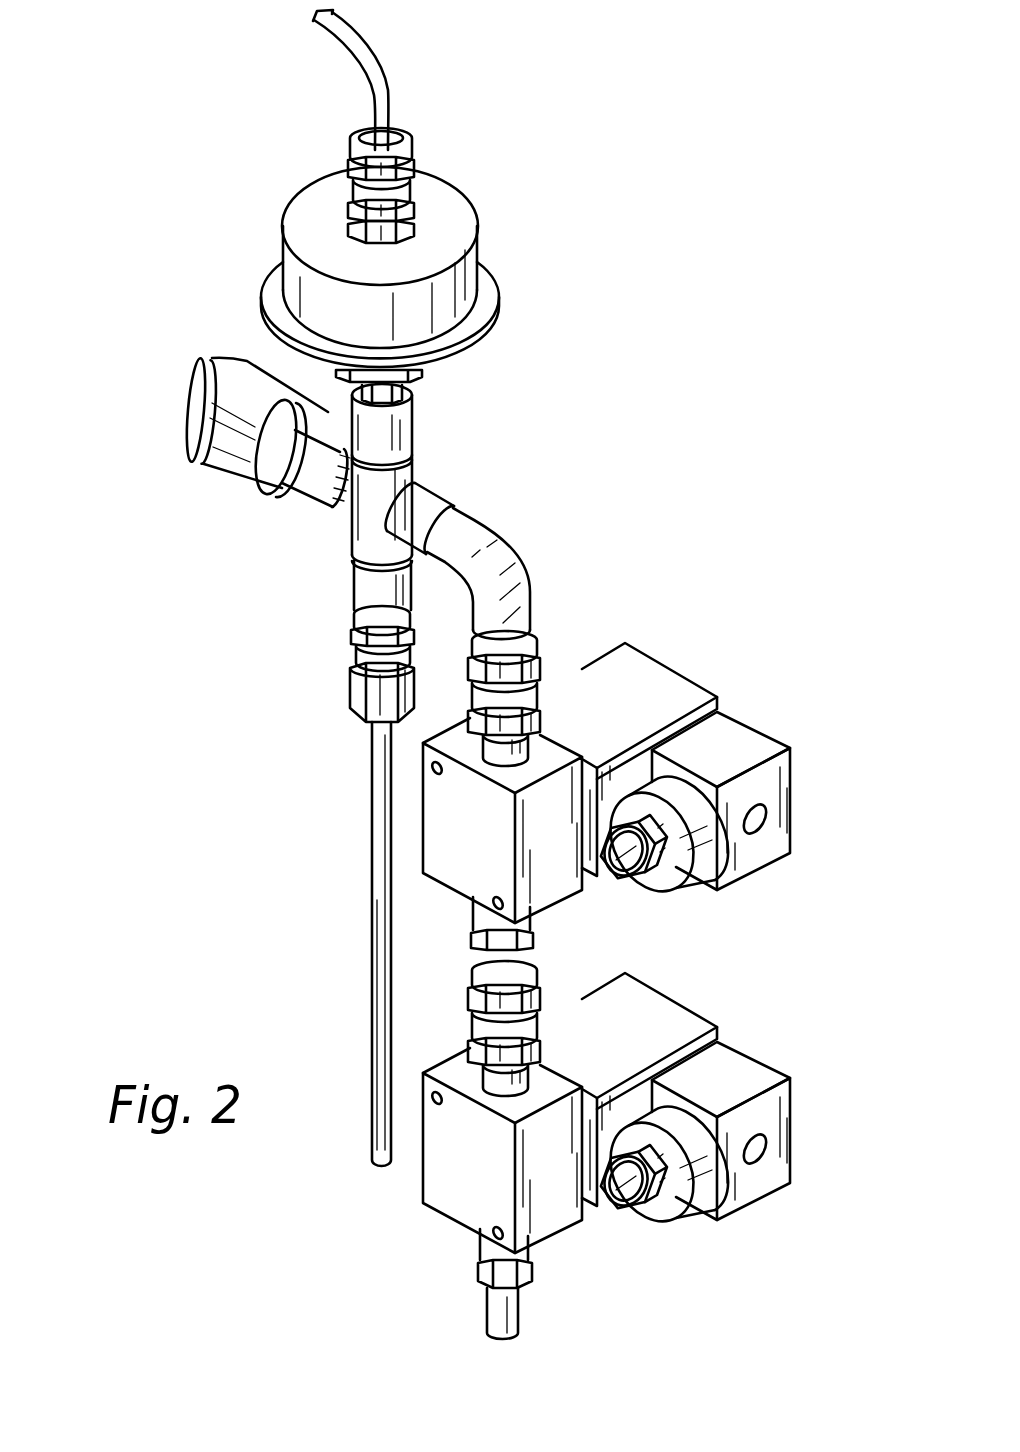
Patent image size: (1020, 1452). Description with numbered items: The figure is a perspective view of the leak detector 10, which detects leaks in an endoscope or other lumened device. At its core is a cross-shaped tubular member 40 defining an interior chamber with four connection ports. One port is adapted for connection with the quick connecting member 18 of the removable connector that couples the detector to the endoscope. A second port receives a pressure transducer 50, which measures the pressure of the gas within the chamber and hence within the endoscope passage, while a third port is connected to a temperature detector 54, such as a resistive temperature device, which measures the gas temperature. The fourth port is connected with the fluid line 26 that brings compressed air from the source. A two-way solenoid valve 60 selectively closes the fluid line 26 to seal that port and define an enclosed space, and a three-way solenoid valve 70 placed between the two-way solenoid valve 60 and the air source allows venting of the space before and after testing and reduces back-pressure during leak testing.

The leak detector 10 is at (657, 340).
The quick connecting member 18 is at (203, 387).
The fluid line 26 is at (507, 1313).
The cross-shaped tubular member 40 is at (363, 508).
The pressure transducer 50 is at (487, 287).
The temperature detector 54 is at (360, 693).
The two-way solenoid valve 60 is at (650, 684).
The three-way solenoid valve 70 is at (666, 1013).